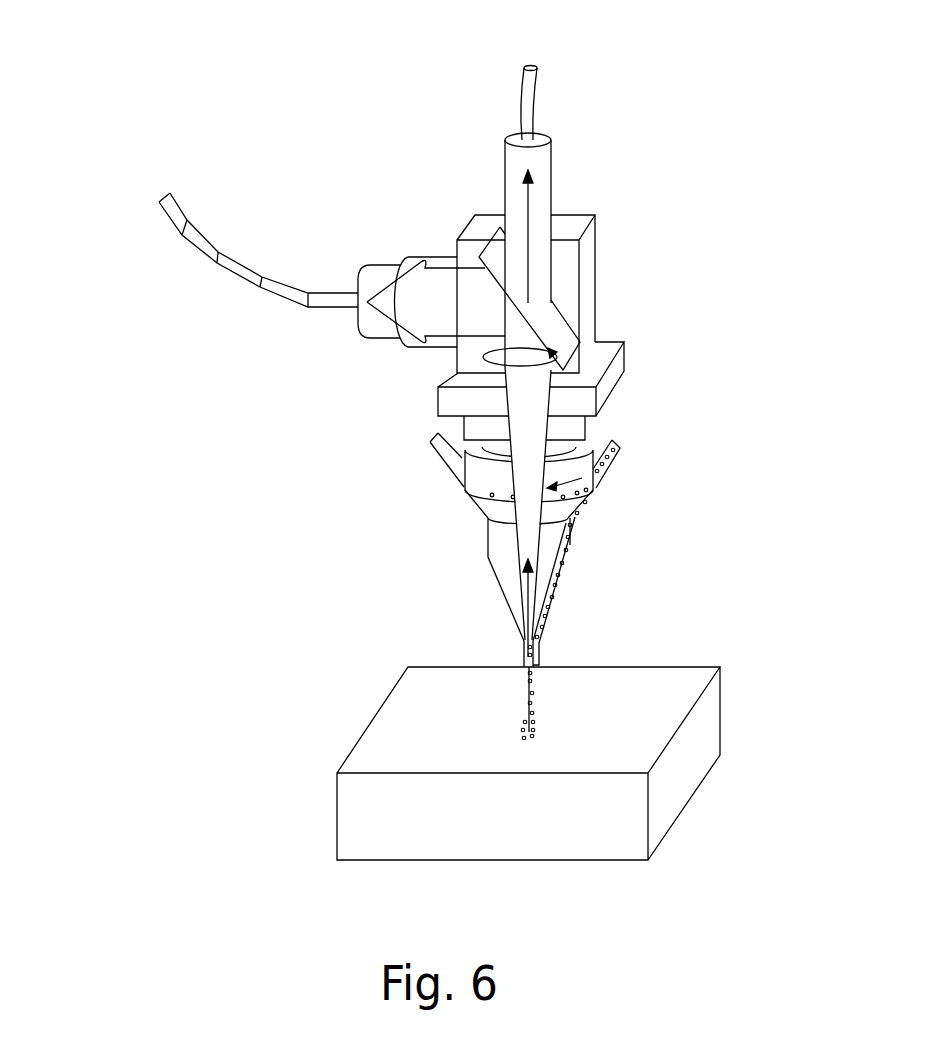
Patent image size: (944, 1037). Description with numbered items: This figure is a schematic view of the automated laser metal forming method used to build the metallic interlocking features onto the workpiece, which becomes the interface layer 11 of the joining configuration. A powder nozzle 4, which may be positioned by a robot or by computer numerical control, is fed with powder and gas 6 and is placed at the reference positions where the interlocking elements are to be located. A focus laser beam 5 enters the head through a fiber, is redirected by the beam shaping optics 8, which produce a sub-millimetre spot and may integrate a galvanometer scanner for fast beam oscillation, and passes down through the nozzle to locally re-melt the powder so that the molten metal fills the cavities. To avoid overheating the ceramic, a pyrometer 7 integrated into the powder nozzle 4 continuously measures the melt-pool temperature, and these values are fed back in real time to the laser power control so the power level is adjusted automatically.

The powder nozzle 4 is at (540, 578).
The focus laser beam 5 is at (163, 196).
The powder and gas 6 is at (627, 423).
The pyrometer 7 is at (538, 75).
The beam shaping optics 8 is at (563, 342).
The interface layer 11 is at (722, 715).